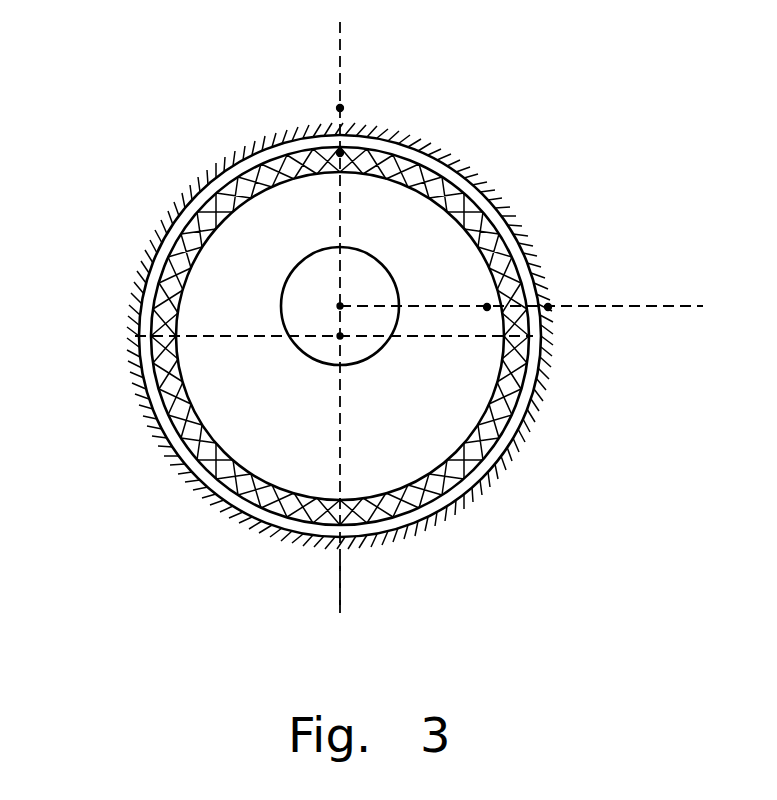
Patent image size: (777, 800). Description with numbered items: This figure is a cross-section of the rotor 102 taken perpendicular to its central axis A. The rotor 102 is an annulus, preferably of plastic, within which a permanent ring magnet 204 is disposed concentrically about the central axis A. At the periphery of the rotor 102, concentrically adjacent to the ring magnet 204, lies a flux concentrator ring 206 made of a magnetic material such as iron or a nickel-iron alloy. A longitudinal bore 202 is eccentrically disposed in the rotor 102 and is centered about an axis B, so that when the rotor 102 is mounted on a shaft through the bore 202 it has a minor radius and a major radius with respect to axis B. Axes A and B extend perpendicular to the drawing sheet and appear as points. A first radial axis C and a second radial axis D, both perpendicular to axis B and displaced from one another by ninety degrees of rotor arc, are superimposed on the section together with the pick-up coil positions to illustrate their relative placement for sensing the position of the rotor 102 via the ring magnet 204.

The rotor 102 is at (385, 321).
The longitudinal bore 202 is at (276, 236).
The permanent ring magnet 204 is at (273, 336).
The flux concentrator ring 206 is at (340, 381).
The central axis A is at (302, 371).
The bore axis B is at (280, 307).
The first radial axis C is at (341, 602).
The second radial axis D is at (534, 307).